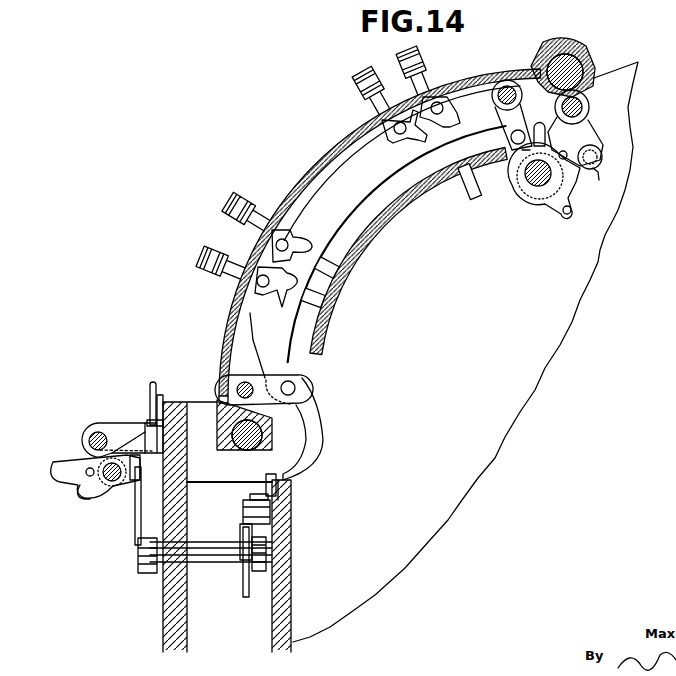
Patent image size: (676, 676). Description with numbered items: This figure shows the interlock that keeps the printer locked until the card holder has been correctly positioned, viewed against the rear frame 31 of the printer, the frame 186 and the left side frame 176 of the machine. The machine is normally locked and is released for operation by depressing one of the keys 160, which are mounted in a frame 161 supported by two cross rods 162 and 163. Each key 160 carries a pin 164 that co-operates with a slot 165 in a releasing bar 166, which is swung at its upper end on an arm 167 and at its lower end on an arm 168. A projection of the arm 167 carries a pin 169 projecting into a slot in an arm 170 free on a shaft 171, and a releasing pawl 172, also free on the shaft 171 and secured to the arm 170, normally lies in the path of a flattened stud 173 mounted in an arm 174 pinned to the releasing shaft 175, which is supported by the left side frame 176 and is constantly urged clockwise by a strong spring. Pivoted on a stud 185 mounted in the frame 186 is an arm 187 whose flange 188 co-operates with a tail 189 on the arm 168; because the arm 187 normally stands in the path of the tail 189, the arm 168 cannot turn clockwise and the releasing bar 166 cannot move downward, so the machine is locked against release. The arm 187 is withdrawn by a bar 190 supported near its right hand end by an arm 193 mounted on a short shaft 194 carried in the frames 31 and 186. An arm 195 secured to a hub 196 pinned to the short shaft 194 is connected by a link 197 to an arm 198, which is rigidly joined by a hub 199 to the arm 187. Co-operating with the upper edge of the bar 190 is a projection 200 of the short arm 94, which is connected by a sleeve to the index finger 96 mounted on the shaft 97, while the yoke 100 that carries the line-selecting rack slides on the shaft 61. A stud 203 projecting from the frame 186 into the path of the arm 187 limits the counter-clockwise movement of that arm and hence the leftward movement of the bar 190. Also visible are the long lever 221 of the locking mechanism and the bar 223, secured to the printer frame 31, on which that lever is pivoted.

The rear frame 31 is at (180, 640).
The shaft 61 is at (88, 440).
The short arm 94 is at (88, 497).
The index finger 96 is at (80, 462).
The shaft 97 is at (114, 482).
The yoke 100 is at (136, 423).
The keys 160 is at (398, 58).
The frame 161 is at (484, 82).
The cross rod 162 is at (586, 78).
The cross rod 163 is at (234, 446).
The pin 164 is at (406, 142).
The slot 165 is at (426, 156).
The releasing bar 166 is at (368, 203).
The arm 167 is at (510, 121).
The arm 168 is at (306, 407).
The pin 169 is at (548, 117).
The arm 170 is at (522, 150).
The shaft 171 is at (527, 180).
The releasing pawl 172 is at (594, 142).
The flattened stud 173 is at (598, 180).
The arm 174 is at (590, 119).
The releasing shaft 175 is at (586, 101).
The left side frame 176 is at (586, 290).
The stud 185 is at (245, 514).
The frame 186 is at (272, 632).
The arm 187 is at (284, 493).
The flange 188 is at (272, 478).
The tail 189 is at (316, 447).
The bar 190 is at (137, 482).
The arm 193 is at (134, 530).
The short shaft 194 is at (162, 565).
The arm 195 is at (250, 592).
The hub 196 is at (256, 572).
The link 197 is at (244, 576).
The arm 198 is at (245, 528).
The hub 199 is at (258, 493).
The projection 200 is at (137, 467).
The stud 203 is at (262, 481).
The long lever 221 is at (150, 392).
The bar 223 is at (156, 418).